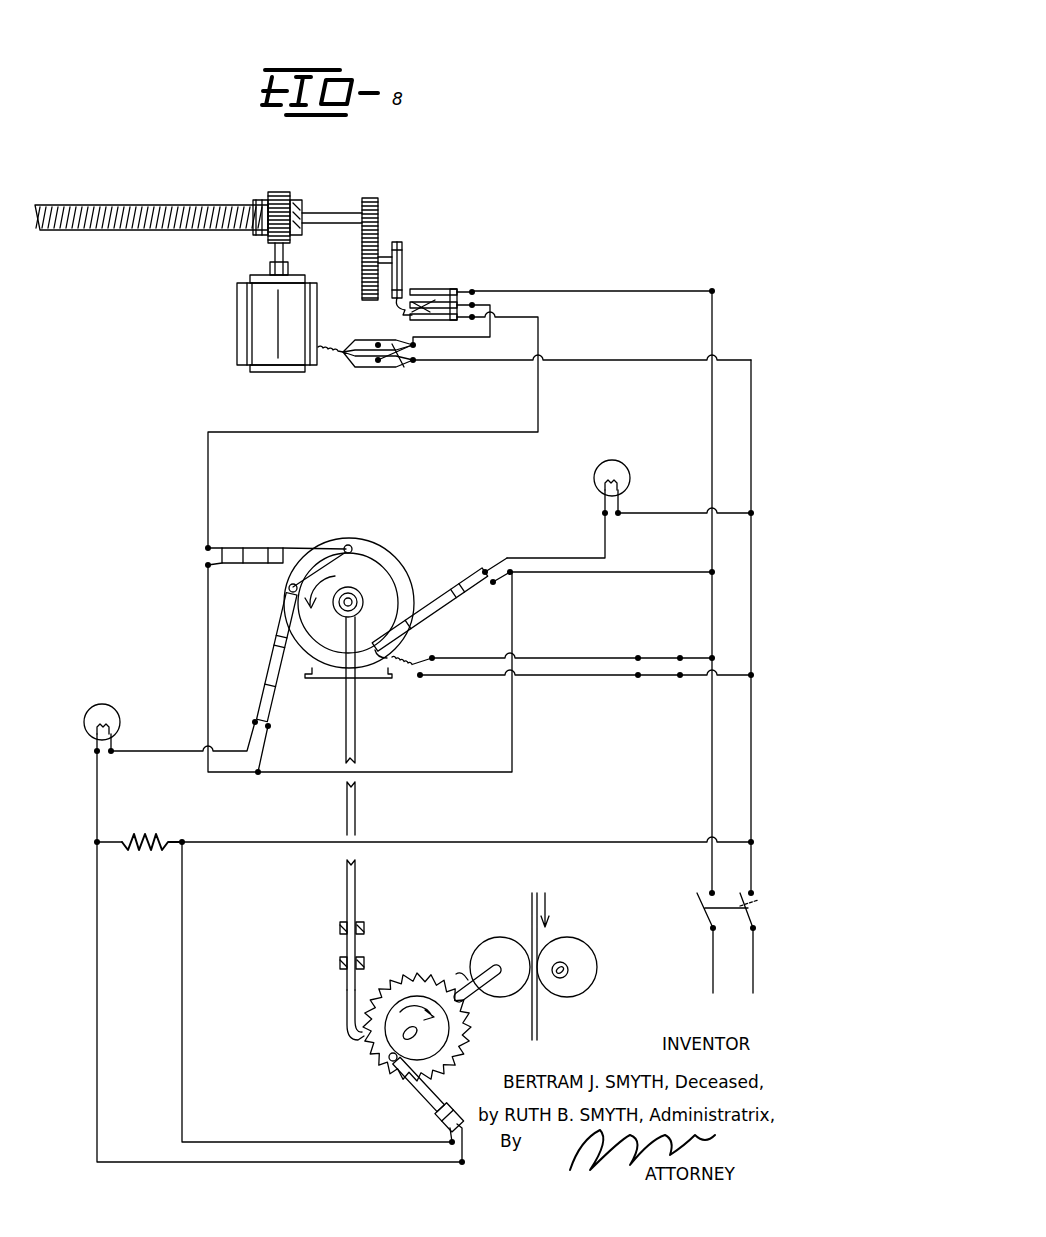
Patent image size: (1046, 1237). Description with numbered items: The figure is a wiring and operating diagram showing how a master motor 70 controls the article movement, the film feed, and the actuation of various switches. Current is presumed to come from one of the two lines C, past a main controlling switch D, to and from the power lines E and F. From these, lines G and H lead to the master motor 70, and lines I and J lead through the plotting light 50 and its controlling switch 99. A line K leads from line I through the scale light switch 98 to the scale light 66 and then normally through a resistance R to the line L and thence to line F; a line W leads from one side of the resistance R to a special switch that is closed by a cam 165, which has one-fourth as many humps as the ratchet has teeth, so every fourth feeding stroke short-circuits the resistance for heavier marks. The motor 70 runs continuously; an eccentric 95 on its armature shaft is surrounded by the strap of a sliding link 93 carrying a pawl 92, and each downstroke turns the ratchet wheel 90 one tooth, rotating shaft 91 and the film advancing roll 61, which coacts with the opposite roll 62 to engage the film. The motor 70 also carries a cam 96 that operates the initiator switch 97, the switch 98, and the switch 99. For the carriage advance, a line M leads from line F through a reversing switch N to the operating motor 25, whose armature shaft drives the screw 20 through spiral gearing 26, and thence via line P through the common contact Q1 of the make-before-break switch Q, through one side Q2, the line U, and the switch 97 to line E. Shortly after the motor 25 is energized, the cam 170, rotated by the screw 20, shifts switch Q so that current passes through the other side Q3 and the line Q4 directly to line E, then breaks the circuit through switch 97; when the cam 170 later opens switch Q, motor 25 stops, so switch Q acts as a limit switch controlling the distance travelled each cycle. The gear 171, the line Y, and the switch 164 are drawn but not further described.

The screw 20 is at (118, 212).
The spiral gearing 26 is at (296, 208).
The gear 171 is at (380, 224).
The cam 170 is at (403, 258).
The operating motor 25 is at (245, 324).
The make-before-break switch Q is at (398, 314).
The common contact Q1 is at (446, 297).
The one side of switch Q Q2 is at (436, 318).
The other side of switch Q Q3 is at (432, 298).
The line Q4 is at (616, 291).
The line P is at (493, 331).
The line U is at (373, 434).
The reversing switch N is at (390, 366).
The line M is at (621, 360).
The power line E is at (710, 752).
The power line F is at (728, 747).
The lines C is at (726, 943).
The main controlling switch D is at (541, 1017).
The initiator switch 97 is at (264, 566).
The line K is at (513, 624).
The master motor 70 is at (408, 590).
The cam 96 is at (380, 585).
The eccentric 95 is at (353, 598).
The sliding link 93 is at (358, 746).
The switch 98 is at (286, 686).
The switch 99 is at (444, 605).
The plotting light 50 is at (595, 480).
The line I is at (671, 513).
The line J is at (671, 571).
The line G is at (605, 657).
The line H is at (585, 685).
The scale light 66 is at (88, 722).
The conductor Y is at (279, 958).
The resistance R is at (157, 823).
The line W is at (176, 965).
The line L is at (515, 840).
The ratchet wheel 90 is at (463, 1047).
The cam 165 is at (436, 1029).
The pawl 92 is at (345, 1018).
The shaft 91 is at (466, 979).
The film advancing roll 61 is at (503, 947).
The roll 62 is at (581, 954).
The switch 164 is at (456, 1118).